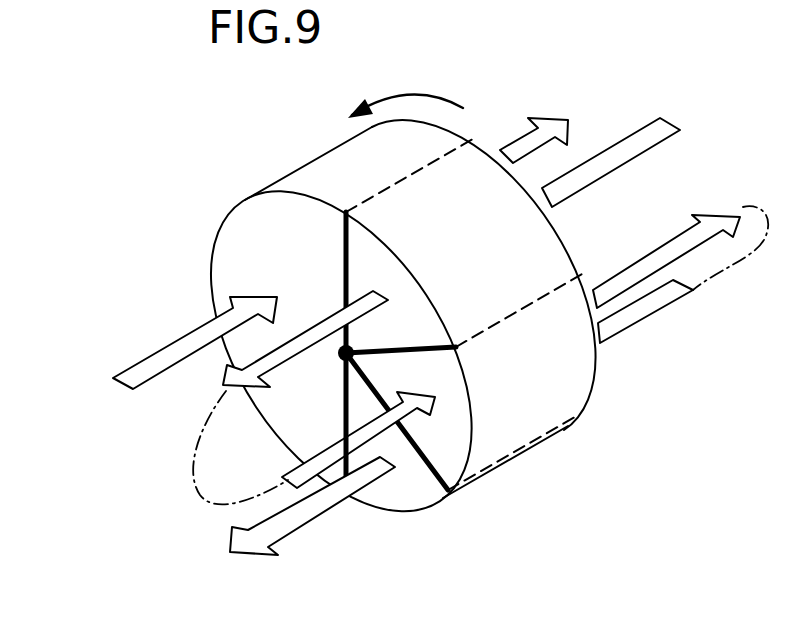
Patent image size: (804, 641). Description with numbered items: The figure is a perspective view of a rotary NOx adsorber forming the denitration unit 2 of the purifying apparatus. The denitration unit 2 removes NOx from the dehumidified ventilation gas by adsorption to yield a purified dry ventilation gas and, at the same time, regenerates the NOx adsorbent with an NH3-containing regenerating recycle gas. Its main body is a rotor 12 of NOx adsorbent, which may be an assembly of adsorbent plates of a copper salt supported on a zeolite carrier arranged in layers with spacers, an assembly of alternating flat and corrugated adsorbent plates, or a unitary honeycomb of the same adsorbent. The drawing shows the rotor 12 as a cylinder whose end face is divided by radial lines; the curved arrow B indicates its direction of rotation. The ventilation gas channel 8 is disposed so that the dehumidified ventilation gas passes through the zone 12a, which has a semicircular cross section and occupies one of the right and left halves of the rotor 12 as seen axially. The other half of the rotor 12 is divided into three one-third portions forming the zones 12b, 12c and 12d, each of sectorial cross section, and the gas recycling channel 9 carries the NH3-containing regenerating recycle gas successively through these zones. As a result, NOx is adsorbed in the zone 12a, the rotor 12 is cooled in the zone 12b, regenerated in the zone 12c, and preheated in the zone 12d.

The denitration unit 2 is at (328, 127).
The ventilation gas channel 8 is at (180, 350).
The gas recycling channel 9 is at (645, 135).
The rotor 12 is at (267, 213).
The zone 12a is at (235, 250).
The zone 12b is at (547, 243).
The zone 12c is at (571, 390).
The zone 12d is at (417, 498).
The direction of rotation B is at (418, 93).